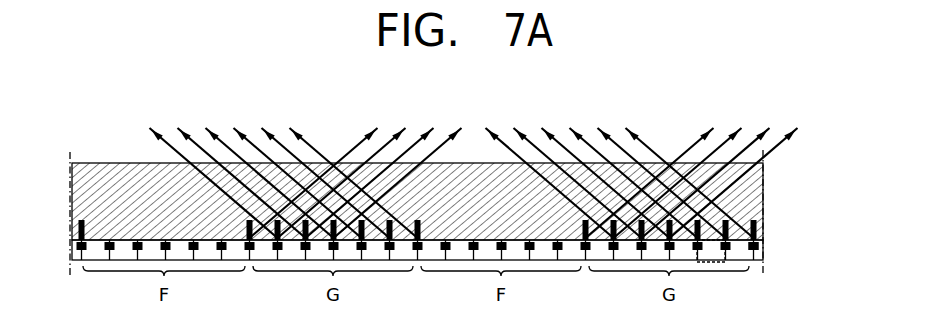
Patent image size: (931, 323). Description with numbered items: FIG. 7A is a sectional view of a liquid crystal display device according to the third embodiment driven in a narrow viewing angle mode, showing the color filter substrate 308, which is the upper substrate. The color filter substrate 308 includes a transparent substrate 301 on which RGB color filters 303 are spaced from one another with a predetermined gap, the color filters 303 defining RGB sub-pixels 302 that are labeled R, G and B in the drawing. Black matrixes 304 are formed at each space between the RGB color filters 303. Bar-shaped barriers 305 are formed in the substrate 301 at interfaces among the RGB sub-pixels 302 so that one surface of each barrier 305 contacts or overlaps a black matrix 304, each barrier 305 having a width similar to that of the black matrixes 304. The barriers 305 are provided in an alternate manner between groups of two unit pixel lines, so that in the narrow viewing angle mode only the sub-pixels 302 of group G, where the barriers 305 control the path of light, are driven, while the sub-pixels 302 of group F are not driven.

The substrate 301 is at (763, 176).
The RGB sub-pixel 302 is at (710, 250).
The RGB color filter 303 is at (762, 258).
The black matrix 304 is at (760, 245).
The barrier 305 is at (758, 224).
The color filter substrate 308 is at (771, 105).